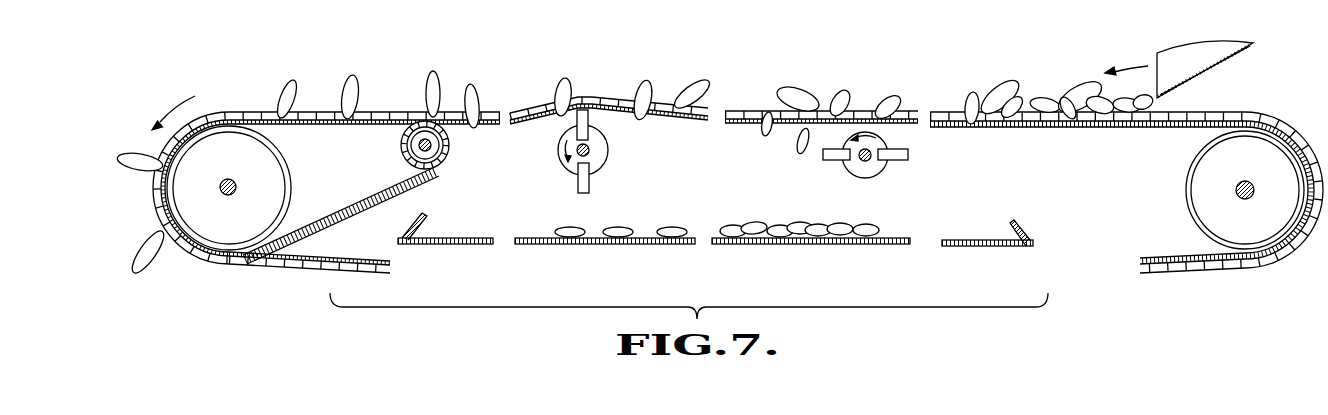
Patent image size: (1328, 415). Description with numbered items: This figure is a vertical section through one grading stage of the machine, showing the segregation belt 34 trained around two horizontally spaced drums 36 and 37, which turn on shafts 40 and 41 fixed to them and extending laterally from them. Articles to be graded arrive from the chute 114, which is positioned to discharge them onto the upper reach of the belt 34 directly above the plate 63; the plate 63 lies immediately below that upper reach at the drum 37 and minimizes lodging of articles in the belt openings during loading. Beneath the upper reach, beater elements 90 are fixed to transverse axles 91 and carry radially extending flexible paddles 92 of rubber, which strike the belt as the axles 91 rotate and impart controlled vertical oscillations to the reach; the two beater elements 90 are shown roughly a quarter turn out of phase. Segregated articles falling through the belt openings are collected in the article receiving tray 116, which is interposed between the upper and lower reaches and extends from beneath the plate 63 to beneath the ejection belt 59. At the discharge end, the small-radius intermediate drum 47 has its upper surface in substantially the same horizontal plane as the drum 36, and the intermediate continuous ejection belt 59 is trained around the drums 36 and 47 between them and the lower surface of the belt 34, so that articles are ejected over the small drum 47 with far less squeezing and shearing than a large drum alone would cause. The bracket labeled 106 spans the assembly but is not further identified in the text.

The segregation belt 34 is at (257, 264).
The drum 36 is at (287, 163).
The drum 37 is at (1186, 216).
The shaft 40 is at (229, 195).
The shaft 41 is at (1257, 165).
The intermediate drum 47 is at (401, 145).
The intermediate continuous ejection belt 59 is at (340, 212).
The plate 63 is at (1062, 127).
The beater element 90 is at (598, 166).
The axle 91 is at (590, 148).
The flexible paddle 92 is at (577, 182).
The conveyor assembly 106 is at (889, 413).
The chute 114 is at (1218, 62).
The article receiving tray 116 is at (837, 244).